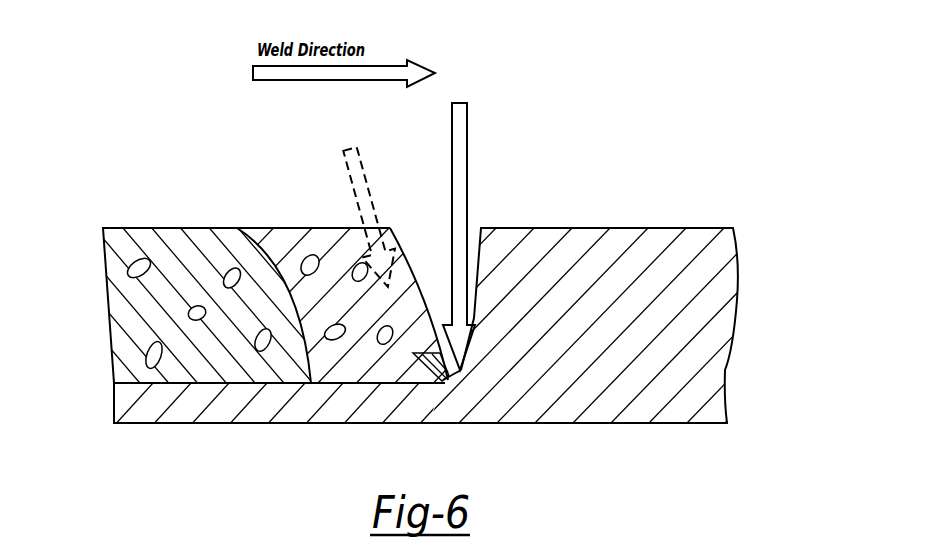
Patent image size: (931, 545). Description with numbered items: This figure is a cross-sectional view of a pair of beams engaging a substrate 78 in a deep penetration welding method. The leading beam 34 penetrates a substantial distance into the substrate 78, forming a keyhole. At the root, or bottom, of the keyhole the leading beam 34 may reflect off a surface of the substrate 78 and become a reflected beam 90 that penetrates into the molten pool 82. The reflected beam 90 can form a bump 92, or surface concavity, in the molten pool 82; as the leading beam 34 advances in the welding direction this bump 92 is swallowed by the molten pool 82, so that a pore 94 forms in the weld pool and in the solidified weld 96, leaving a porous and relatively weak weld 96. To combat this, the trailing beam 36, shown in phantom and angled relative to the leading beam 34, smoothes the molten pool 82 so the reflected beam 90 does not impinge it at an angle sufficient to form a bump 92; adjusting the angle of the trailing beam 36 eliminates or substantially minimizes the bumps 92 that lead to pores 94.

The leading beam 34 is at (467, 160).
The trailing beam 36 is at (346, 167).
The substrate 78 is at (632, 233).
The molten pool 82 is at (312, 228).
The reflected beam 90 is at (437, 388).
The bump 92 is at (432, 352).
The pore 94 is at (128, 258).
The solidified weld 96 is at (130, 307).